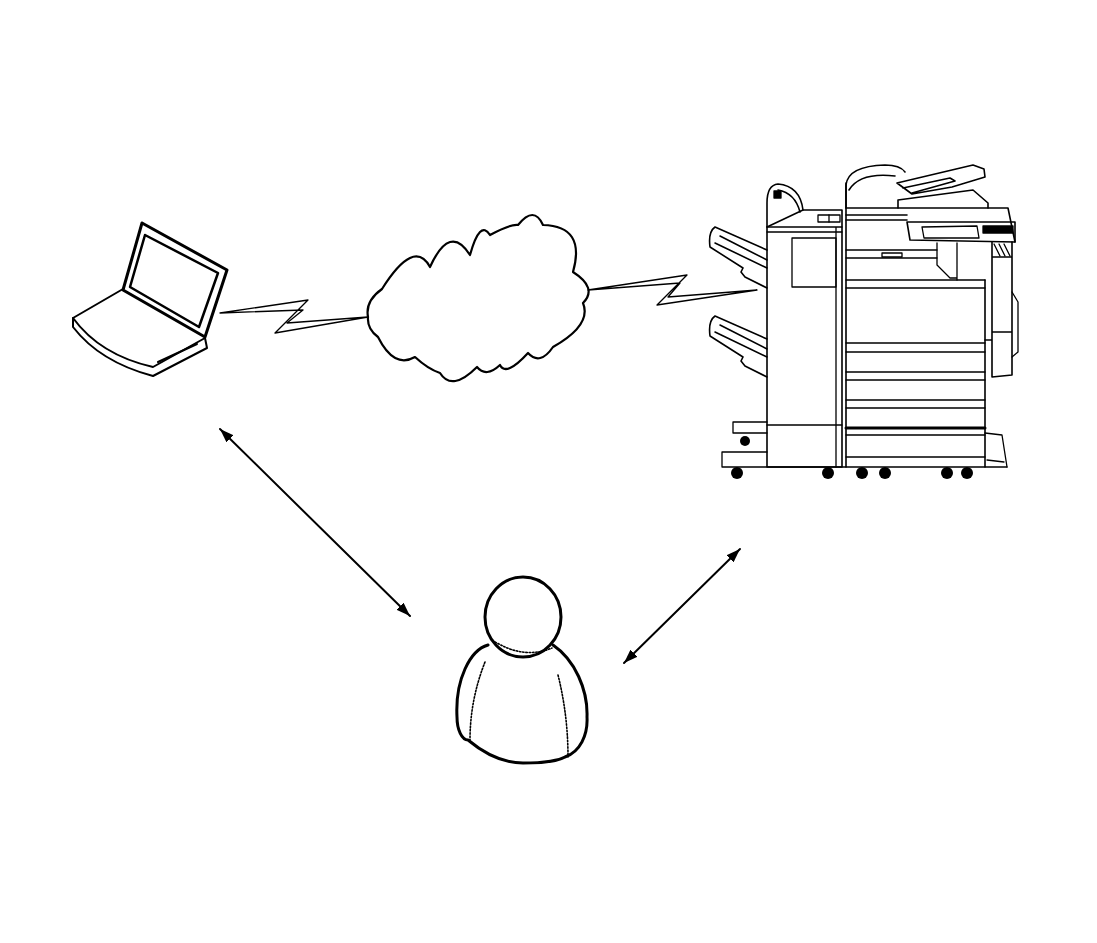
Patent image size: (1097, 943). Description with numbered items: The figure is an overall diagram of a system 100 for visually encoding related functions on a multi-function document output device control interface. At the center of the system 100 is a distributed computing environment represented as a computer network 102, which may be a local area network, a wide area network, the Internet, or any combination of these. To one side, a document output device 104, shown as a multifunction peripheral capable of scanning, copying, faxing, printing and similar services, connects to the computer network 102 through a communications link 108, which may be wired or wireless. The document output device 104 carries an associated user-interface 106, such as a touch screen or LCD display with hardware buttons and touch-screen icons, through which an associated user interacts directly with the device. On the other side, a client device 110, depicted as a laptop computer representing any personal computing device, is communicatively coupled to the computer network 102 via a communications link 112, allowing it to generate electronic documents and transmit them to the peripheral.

The system 100 is at (315, 90).
The computer network 102 is at (527, 221).
The document output device 104 is at (773, 188).
The user-interface 106 is at (1015, 225).
The communications link 108 is at (657, 275).
The client device 110 is at (142, 223).
The communications link 112 is at (290, 301).